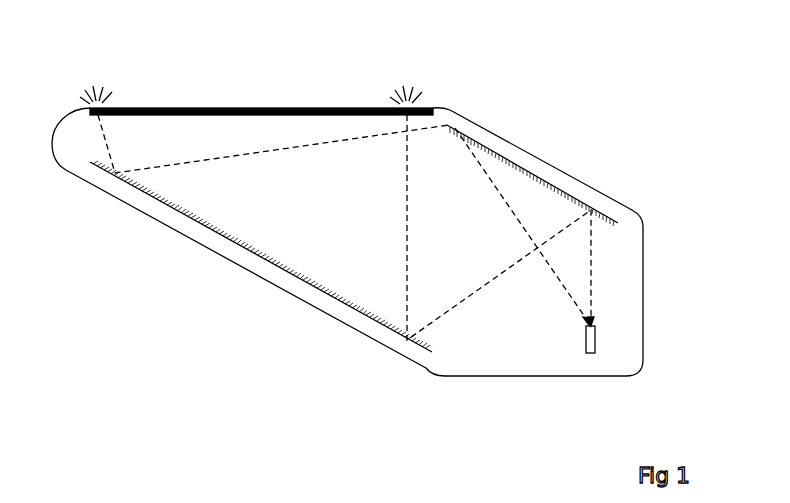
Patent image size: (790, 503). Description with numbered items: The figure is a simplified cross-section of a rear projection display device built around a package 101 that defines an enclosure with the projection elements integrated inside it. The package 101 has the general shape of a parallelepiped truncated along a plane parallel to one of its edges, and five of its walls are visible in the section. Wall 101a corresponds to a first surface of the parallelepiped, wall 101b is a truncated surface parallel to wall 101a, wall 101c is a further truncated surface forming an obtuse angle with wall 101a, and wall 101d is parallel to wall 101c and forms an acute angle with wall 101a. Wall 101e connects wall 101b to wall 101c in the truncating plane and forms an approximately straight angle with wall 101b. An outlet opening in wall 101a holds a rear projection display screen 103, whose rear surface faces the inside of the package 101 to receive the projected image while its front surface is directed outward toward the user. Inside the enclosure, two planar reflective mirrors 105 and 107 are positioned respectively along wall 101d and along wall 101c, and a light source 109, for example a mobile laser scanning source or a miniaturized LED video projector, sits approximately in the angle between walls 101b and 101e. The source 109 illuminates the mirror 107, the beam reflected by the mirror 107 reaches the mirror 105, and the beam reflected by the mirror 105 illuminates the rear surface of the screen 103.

The package 101 is at (385, 250).
The wall 101a is at (443, 107).
The wall 101b is at (467, 377).
The wall 101c is at (497, 135).
The wall 101d is at (182, 236).
The wall 101e is at (644, 270).
The rear projection display screen 103 is at (229, 108).
The planar reflective mirror 105 is at (288, 277).
The planar reflective mirror 107 is at (518, 164).
The light source 109 is at (596, 338).